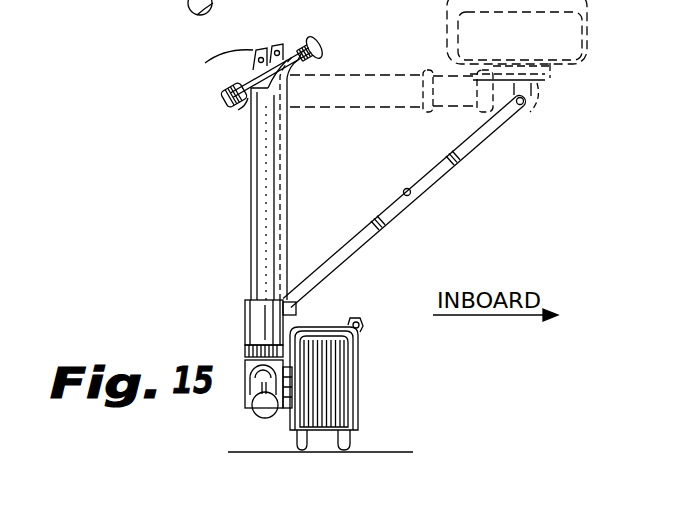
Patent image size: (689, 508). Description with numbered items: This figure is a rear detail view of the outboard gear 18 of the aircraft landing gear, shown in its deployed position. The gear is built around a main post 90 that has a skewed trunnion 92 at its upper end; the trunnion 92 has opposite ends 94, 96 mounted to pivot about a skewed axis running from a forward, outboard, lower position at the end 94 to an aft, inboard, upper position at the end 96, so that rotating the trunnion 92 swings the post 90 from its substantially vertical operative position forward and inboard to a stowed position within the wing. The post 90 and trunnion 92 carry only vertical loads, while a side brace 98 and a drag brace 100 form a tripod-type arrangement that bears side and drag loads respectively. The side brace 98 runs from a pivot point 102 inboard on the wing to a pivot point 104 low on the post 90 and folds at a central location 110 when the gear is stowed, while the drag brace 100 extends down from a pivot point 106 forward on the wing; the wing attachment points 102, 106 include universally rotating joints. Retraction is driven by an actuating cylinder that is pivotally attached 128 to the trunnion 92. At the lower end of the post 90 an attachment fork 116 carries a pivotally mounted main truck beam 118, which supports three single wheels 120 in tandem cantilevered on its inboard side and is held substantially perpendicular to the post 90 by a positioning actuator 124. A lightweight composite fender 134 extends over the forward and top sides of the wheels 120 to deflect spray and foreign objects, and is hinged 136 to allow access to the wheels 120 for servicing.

The outboard gear 18 is at (197, 188).
The main post 90 is at (262, 221).
The skewed trunnion 92 is at (222, 90).
The trunnion end 94 is at (224, 110).
The trunnion end 96 is at (326, 38).
The side brace 98 is at (432, 192).
The drag brace 100 is at (255, 0).
The pivot point 102 is at (535, 110).
The pivot point 104 is at (298, 301).
The pivot point 106 is at (197, 15).
The central location 110 is at (403, 189).
The attachment fork 116 is at (244, 352).
The main truck beam 118 is at (252, 413).
The single wheel 120 is at (587, 40).
The positioning actuator 124 is at (167, 12).
The pivotal attachment 128 is at (205, 63).
The fender 134 is at (360, 383).
The hinge 136 is at (363, 328).